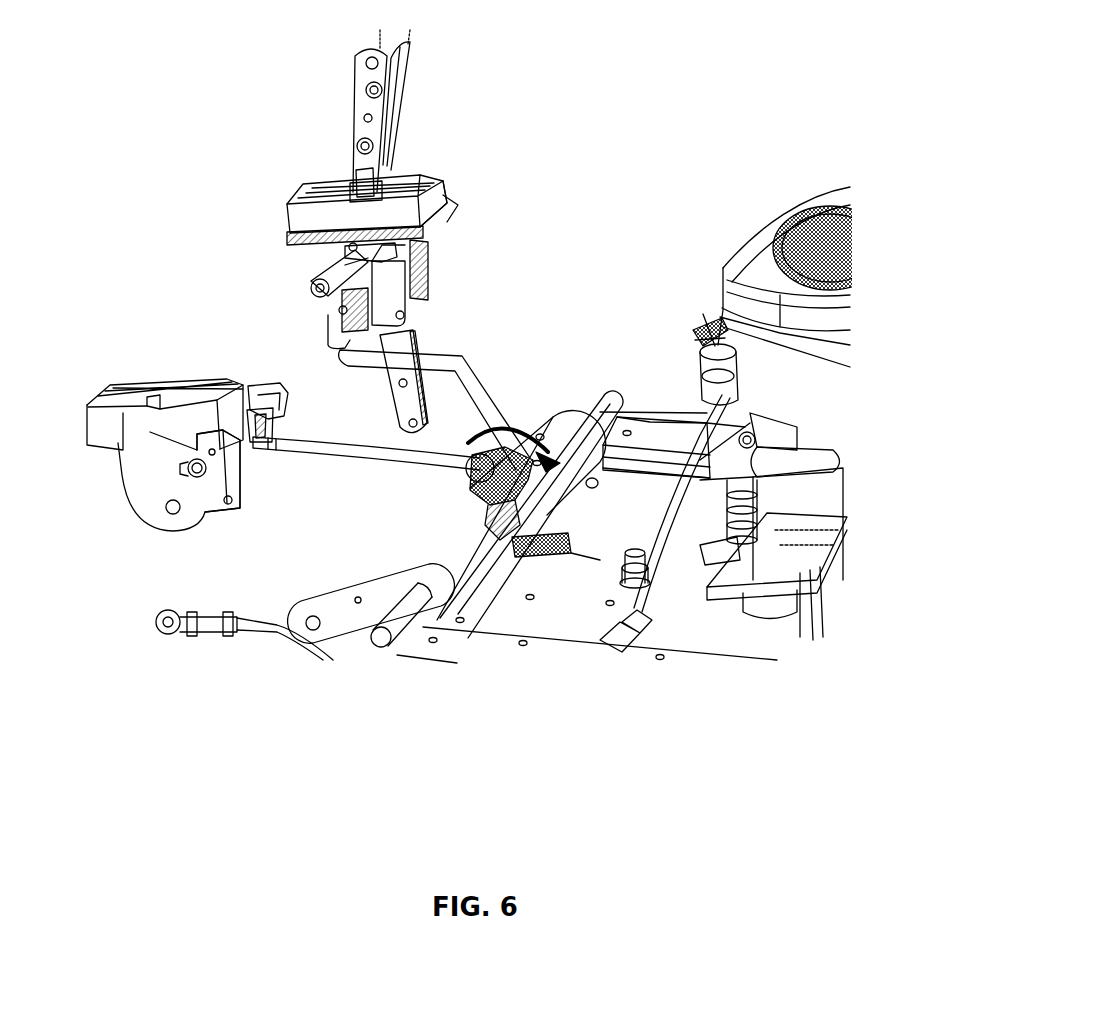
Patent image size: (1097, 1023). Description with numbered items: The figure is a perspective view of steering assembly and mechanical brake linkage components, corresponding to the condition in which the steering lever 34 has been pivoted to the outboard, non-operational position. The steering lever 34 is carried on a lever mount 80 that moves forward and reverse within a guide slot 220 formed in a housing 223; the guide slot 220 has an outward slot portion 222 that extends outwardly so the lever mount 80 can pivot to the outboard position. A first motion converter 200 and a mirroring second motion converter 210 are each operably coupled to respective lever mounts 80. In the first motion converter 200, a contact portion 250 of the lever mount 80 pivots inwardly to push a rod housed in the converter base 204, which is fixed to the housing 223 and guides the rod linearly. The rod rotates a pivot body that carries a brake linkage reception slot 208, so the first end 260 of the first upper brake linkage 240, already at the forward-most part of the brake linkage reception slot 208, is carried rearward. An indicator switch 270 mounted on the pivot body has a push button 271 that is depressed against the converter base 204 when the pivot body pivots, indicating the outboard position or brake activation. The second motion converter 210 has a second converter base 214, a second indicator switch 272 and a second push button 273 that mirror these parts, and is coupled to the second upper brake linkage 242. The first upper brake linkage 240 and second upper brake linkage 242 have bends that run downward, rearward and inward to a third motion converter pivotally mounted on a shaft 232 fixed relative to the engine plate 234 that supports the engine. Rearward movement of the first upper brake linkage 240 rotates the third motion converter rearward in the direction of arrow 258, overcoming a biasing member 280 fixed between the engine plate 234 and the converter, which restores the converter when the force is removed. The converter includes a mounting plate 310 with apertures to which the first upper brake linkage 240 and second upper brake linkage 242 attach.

The steering lever 34 is at (403, 48).
The lever mount 80 is at (358, 170).
The first motion converter 200 is at (280, 289).
The converter base 204 is at (417, 262).
The brake linkage reception slot 208 is at (355, 327).
The second motion converter 210 is at (223, 378).
The second converter base 214 is at (240, 462).
The guide slot 220 is at (327, 191).
The outward slot portion 222 is at (152, 408).
The housing 223 is at (432, 178).
The shaft 232 is at (422, 600).
The engine plate 234 is at (710, 647).
The first upper brake linkage 240 is at (473, 393).
The second upper brake linkage 242 is at (418, 467).
The contact portion 250 is at (353, 247).
The direction of rotation arrow 258 is at (507, 430).
The first end 260 is at (332, 327).
The indicator switch 270 is at (380, 300).
The push button 271 is at (393, 282).
The second indicator switch 272 is at (278, 397).
The second push button 273 is at (263, 415).
The biasing member 280 is at (557, 540).
The mounting plate 310 is at (483, 462).